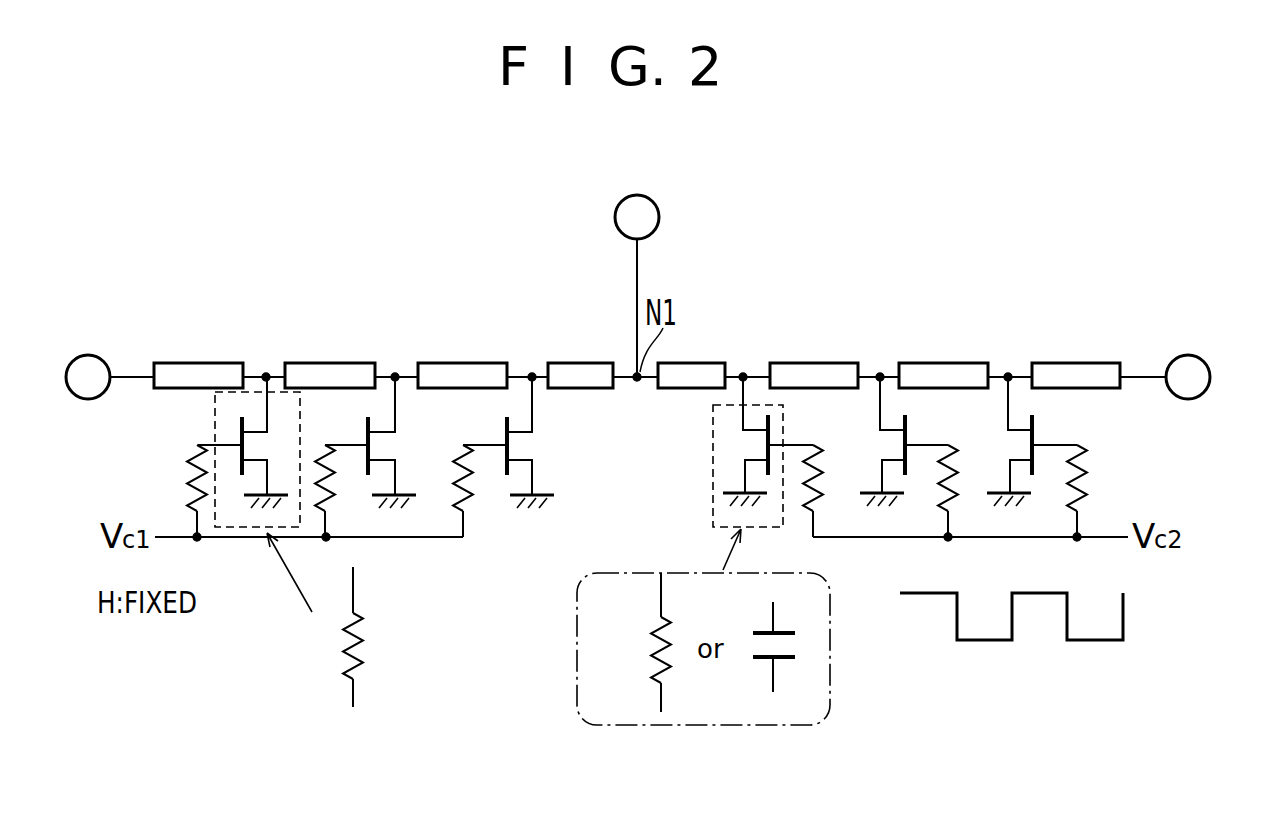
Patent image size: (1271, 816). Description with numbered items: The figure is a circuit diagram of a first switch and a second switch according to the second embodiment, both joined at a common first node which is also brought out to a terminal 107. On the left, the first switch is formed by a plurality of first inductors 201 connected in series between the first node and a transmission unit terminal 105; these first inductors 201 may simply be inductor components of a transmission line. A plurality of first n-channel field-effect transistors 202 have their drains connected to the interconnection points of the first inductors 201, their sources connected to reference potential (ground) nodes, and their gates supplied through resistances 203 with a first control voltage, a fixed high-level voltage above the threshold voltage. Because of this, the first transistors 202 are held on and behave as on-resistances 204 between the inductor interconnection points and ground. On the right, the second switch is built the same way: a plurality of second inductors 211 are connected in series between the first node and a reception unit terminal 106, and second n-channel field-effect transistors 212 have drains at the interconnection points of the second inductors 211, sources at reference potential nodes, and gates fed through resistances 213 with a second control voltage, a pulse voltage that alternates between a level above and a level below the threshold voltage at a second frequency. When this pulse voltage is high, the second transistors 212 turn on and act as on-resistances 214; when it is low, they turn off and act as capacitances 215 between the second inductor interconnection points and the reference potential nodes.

The transmission unit terminal 105 is at (88, 354).
The reception unit terminal 106 is at (1188, 354).
The common terminal 107 is at (660, 212).
The first inductor 201 is at (198, 362).
The first n-channel field-effect transistor 202 is at (257, 448).
The resistance 203 is at (195, 490).
The on-resistance 204 is at (368, 640).
The second inductor 211 is at (693, 362).
The second n-channel field-effect transistor 212 is at (1017, 447).
The resistance 213 is at (817, 482).
The on-resistance 214 is at (653, 648).
The capacitance 215 is at (766, 660).